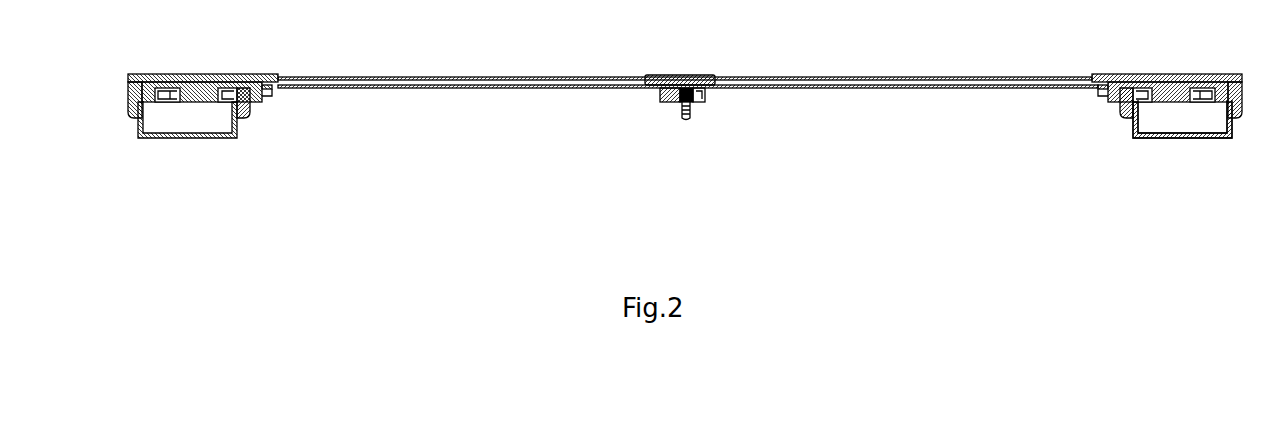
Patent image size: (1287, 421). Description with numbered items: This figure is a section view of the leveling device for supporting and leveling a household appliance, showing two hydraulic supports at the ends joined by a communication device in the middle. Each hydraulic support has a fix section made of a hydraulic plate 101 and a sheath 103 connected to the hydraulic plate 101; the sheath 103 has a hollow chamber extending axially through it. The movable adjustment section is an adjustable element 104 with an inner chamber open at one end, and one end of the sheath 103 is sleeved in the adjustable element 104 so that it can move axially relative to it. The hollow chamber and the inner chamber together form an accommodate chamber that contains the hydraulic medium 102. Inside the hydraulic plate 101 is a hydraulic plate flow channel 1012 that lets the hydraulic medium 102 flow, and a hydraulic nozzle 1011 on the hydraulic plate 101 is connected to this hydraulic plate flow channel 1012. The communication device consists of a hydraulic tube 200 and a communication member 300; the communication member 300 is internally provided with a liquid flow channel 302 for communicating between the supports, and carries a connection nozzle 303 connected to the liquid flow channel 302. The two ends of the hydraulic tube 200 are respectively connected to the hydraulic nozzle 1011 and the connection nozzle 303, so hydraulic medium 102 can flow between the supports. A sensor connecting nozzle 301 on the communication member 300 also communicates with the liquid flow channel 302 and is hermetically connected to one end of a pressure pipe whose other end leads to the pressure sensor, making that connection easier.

The hydraulic plate 101 is at (1200, 78).
The hydraulic nozzle 1011 is at (1100, 86).
The hydraulic plate flow channel 1012 is at (1173, 61).
The hydraulic medium 102 is at (1166, 122).
The sheath 103 is at (1238, 98).
The adjustable element 104 is at (1230, 132).
The hydraulic tube 200 is at (440, 77).
The communication member 300 is at (683, 94).
The sensor connecting nozzle 301 is at (684, 112).
The liquid flow channel 302 is at (672, 88).
The connection nozzle 303 is at (660, 76).